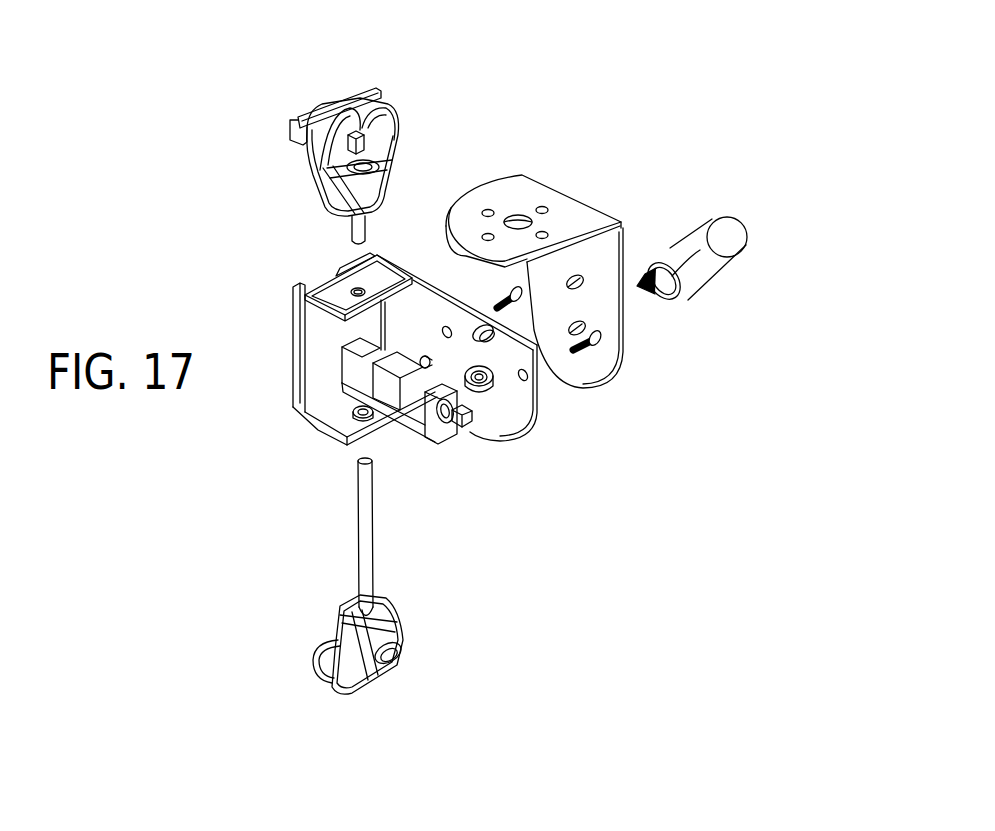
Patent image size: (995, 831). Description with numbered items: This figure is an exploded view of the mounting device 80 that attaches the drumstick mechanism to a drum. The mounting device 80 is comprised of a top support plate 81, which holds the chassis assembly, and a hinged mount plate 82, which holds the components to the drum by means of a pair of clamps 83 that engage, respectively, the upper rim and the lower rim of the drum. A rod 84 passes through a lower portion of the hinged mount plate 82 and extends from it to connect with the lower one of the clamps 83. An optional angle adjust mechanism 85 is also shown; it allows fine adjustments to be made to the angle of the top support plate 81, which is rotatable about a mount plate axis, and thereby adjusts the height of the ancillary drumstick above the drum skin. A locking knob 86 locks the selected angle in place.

The mounting device 80 is at (459, 102).
The top support plate 81 is at (566, 200).
The hinged mount plate 82 is at (512, 407).
The clamps 83 is at (322, 168).
The rod 84 is at (357, 527).
The angle adjust mechanism 85 is at (428, 430).
The locking knob 86 is at (693, 275).